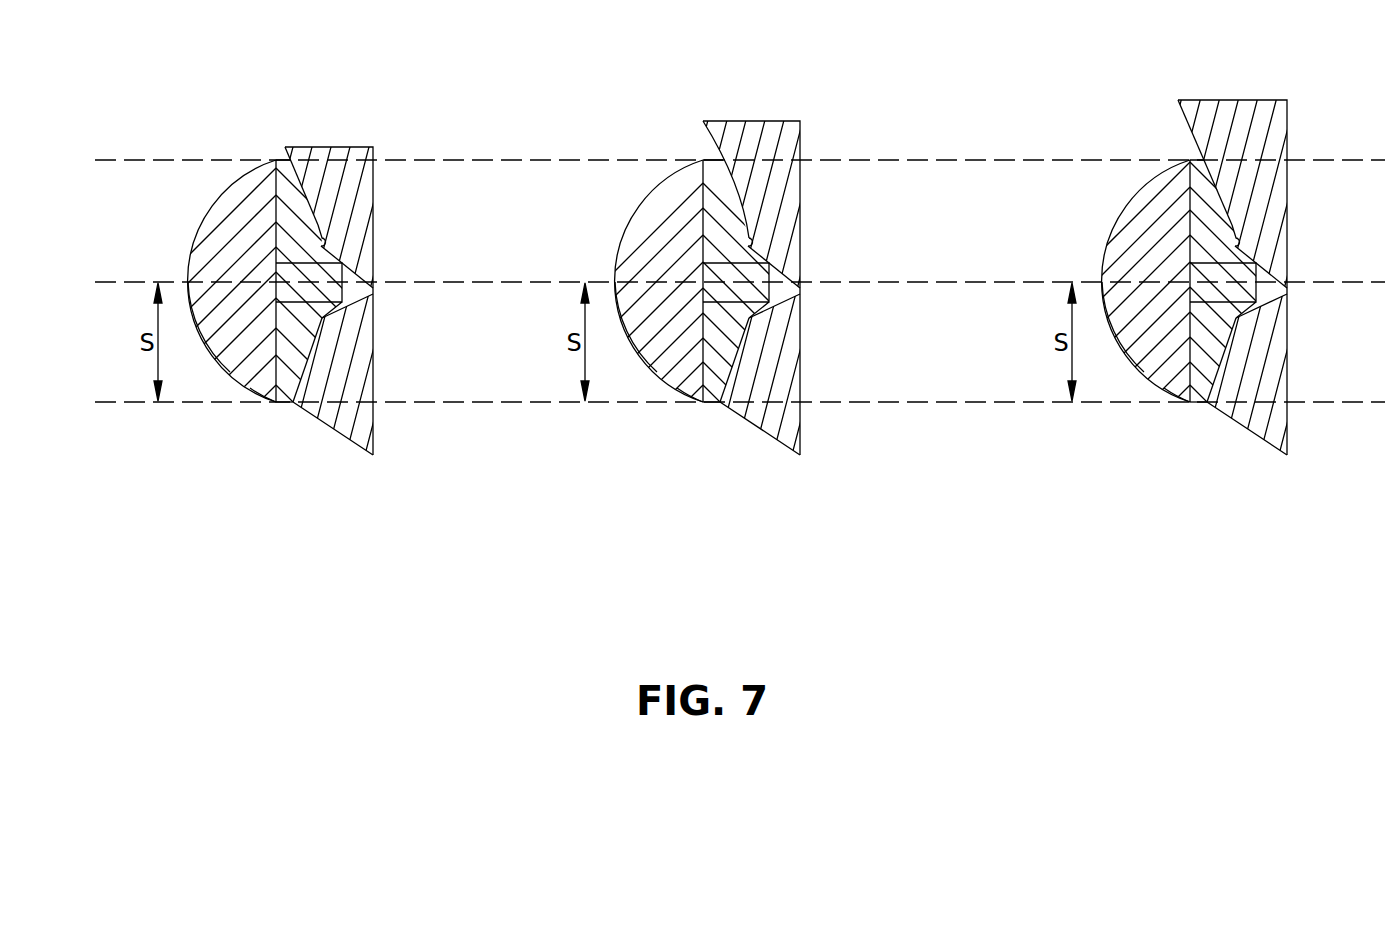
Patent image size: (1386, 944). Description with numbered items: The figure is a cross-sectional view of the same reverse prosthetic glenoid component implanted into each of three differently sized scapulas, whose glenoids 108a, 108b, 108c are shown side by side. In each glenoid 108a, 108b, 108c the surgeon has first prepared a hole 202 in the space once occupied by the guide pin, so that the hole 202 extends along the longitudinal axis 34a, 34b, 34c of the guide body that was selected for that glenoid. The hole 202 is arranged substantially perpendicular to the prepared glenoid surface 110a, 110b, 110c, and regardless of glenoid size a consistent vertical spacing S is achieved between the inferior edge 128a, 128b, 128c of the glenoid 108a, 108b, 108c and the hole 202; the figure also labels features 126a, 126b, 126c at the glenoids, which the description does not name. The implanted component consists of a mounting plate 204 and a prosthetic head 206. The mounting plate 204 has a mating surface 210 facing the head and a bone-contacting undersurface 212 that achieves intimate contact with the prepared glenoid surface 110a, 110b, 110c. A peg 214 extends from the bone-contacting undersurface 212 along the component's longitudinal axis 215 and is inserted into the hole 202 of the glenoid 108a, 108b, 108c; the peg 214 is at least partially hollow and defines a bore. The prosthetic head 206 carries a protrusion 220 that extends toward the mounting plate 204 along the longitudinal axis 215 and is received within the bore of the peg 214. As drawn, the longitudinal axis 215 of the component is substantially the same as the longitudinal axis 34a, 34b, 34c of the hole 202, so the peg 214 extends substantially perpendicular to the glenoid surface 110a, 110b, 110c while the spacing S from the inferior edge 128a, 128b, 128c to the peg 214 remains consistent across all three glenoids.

The longitudinal axis 34a is at (740, 351).
The longitudinal axis 34b is at (740, 351).
The longitudinal axis 34c is at (740, 351).
The longitudinal axis 215 is at (955, 282).
The glenoid 108a is at (353, 178).
The glenoid 108b is at (734, 280).
The glenoid 108c is at (1220, 280).
The glenoid surface 110a is at (322, 241).
The glenoid surface 110b is at (812, 231).
The glenoid surface 110c is at (1297, 231).
The retainer upper edge 126a is at (285, 147).
The retainer upper edge 126b is at (722, 148).
The retainer upper edge 126c is at (1204, 131).
The inferior edge 128a is at (296, 402).
The inferior edge 128b is at (708, 440).
The inferior edge 128c is at (1195, 440).
The hole 202 is at (374, 290).
The mounting plate 204 is at (276, 392).
The prosthetic head 206 is at (222, 340).
The mating surface 210 is at (276, 200).
The bone-contacting undersurface 212 is at (312, 358).
The peg 214 is at (362, 276).
The protrusion 220 is at (283, 272).